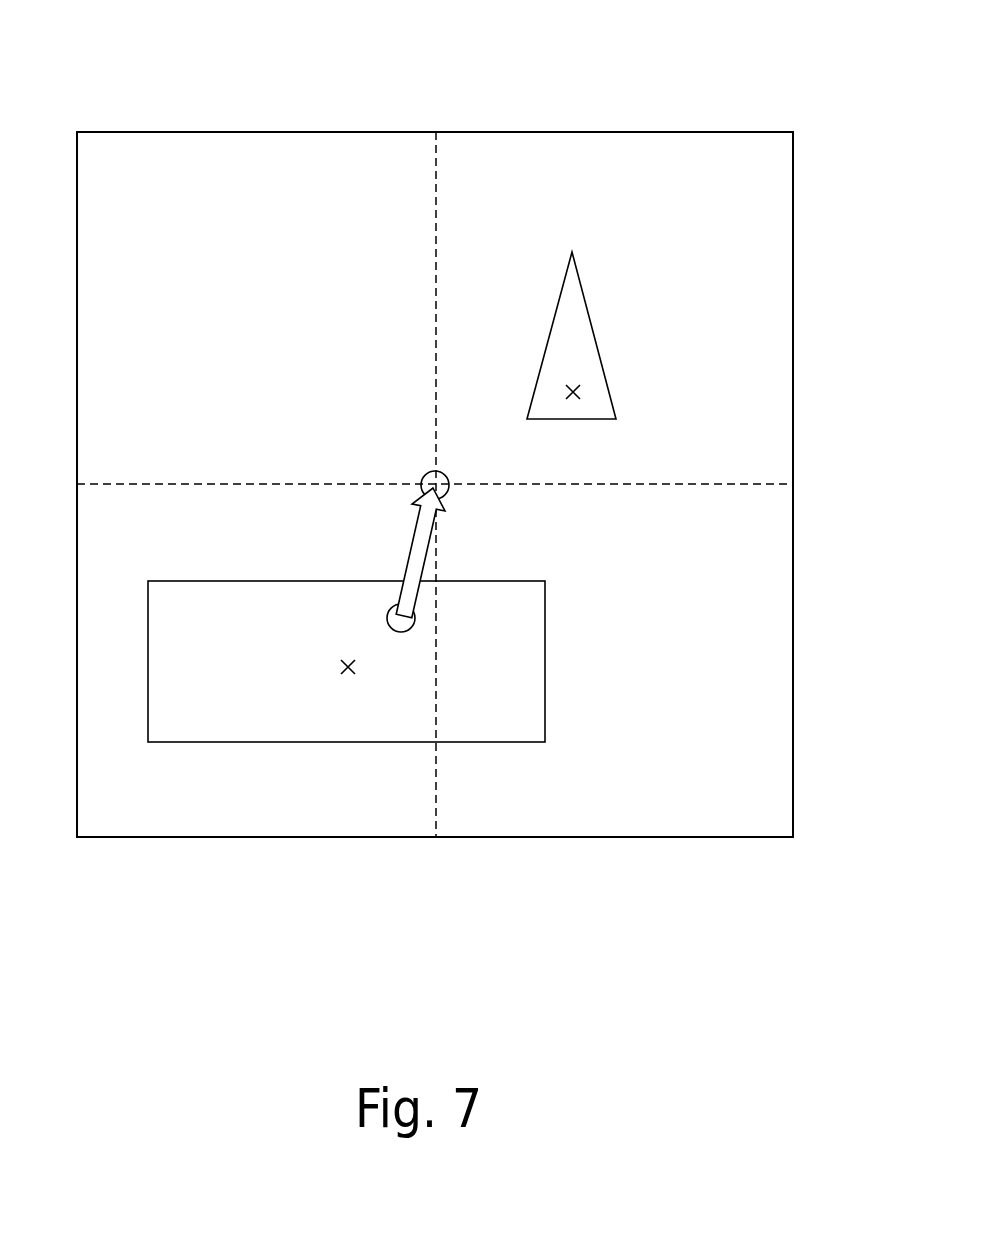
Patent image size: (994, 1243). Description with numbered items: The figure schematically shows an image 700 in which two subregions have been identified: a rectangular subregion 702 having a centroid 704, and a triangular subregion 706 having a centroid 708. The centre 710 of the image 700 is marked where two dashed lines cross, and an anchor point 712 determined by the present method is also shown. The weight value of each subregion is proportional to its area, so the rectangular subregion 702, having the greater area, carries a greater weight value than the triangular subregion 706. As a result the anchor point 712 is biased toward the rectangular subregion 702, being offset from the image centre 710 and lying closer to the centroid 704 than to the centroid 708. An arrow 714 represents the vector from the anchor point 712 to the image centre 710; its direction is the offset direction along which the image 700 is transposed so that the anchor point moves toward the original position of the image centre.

The image 700 is at (574, 128).
The rectangular subregion 702 is at (546, 662).
The centroid 704 is at (355, 668).
The triangular subregion 706 is at (587, 300).
The centroid 708 is at (583, 389).
The centre 710 is at (418, 478).
The anchor point 712 is at (387, 618).
The arrow 714 is at (403, 567).